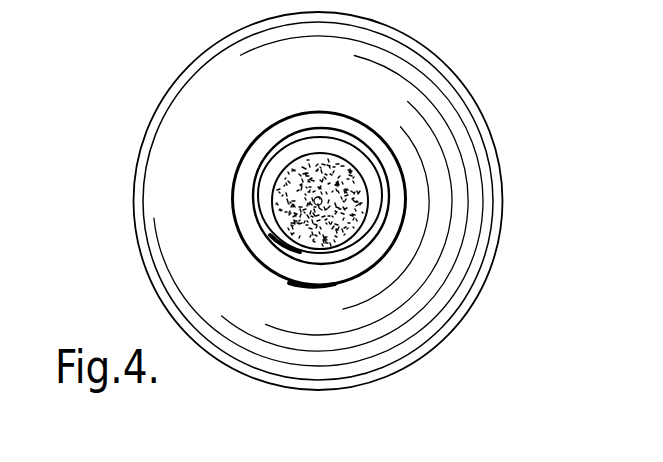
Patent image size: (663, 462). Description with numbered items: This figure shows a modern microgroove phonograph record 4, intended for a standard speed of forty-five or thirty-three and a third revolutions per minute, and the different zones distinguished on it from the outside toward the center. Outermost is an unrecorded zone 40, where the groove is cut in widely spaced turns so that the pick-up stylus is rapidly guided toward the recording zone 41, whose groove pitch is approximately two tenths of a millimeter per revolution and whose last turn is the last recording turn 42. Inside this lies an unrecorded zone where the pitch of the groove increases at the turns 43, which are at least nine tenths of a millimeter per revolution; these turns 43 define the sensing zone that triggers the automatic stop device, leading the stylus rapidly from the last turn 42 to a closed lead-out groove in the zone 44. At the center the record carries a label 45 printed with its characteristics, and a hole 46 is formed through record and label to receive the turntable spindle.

The record 4 is at (145, 269).
The unrecorded zone 40 is at (445, 328).
The recording zone 41 is at (440, 277).
The last turn of the recording zone 42 is at (400, 223).
The turns of increased pitch 43 is at (402, 182).
The lead-out groove zone 44 is at (353, 150).
The label 45 is at (314, 160).
The hole 46 is at (315, 200).